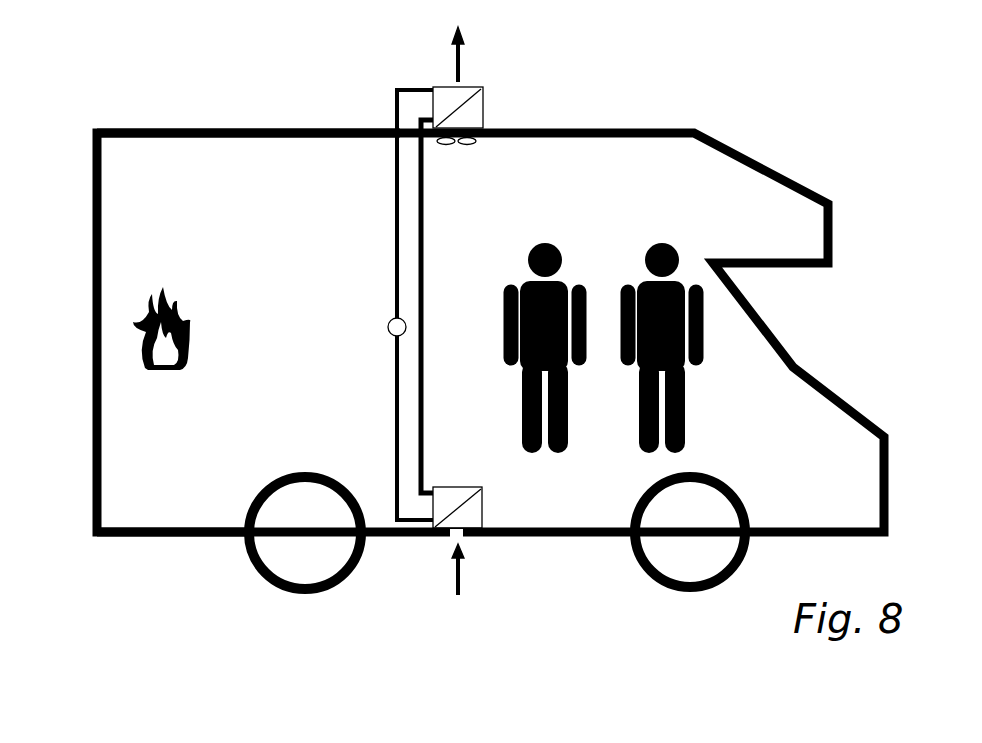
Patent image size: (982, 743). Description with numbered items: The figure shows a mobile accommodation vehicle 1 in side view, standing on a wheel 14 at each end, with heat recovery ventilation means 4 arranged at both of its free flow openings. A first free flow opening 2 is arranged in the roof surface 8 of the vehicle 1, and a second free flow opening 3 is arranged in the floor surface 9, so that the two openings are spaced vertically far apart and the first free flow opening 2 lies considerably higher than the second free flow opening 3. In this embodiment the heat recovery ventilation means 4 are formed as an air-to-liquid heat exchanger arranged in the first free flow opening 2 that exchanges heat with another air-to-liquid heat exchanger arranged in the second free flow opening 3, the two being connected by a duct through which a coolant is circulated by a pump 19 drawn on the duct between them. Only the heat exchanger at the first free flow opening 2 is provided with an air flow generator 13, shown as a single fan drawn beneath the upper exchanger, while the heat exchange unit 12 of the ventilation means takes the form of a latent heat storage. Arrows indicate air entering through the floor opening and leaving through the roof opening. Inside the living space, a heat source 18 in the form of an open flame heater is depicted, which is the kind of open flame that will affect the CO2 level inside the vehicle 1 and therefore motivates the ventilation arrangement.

The mobile accommodation vehicle 1 is at (798, 93).
The first free flow opening 2 is at (442, 127).
The second free flow opening 3 is at (457, 537).
The heat recovery ventilation means 4 is at (521, 311).
The heat exchange unit 12 is at (475, 104).
The roof surface 8 is at (134, 128).
The floor surface 9 is at (167, 537).
The air flow generator 13 is at (467, 137).
The wheel 14 is at (715, 548).
The heat source 18 is at (140, 332).
The pump 19 is at (391, 320).